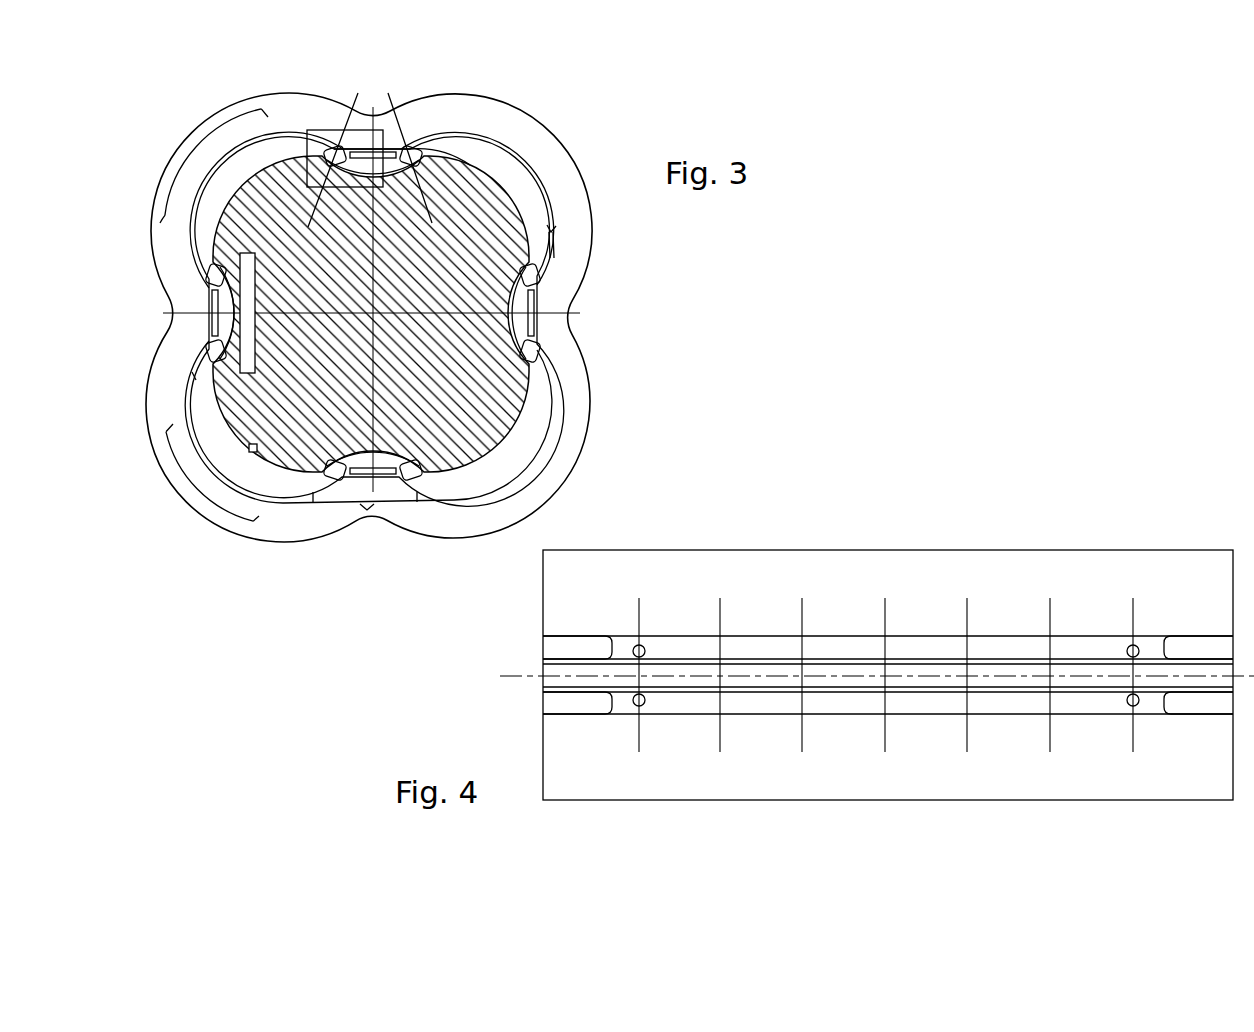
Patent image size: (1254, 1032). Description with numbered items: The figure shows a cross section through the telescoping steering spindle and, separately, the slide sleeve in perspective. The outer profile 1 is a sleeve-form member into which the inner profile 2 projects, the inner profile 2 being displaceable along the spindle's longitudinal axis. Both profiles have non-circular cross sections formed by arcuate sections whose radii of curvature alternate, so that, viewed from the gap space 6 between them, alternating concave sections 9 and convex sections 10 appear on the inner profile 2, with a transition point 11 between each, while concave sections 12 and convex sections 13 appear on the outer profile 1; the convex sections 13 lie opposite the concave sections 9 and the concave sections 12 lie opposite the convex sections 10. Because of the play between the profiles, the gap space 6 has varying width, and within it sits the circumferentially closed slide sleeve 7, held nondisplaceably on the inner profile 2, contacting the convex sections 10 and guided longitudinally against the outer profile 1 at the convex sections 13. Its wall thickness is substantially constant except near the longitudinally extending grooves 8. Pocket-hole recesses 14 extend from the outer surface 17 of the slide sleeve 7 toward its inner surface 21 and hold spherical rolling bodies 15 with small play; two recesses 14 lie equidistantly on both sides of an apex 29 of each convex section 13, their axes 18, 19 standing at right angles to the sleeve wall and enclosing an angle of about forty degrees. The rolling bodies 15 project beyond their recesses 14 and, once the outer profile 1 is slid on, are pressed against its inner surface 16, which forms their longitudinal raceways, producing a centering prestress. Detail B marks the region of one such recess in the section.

In FIG. 3, the outer profile 1 is at (562, 155).
In FIG. 3, the inner profile 2 is at (500, 410).
In FIG. 3, the gap space 6 is at (508, 155).
In FIG. 3, the slide sleeve 7 is at (520, 428).
In FIG. 4, the slide sleeve 7 is at (783, 575).
In FIG. 3, the longitudinally extending grooves 8 is at (363, 153).
In FIG. 3, the concave sections of the inner profile 9 is at (255, 313).
In FIG. 3, the convex sections of the inner profile 10 is at (209, 481).
In FIG. 3, the transition point 11 is at (192, 372).
In FIG. 3, the concave sections of the outer profile 12 is at (211, 157).
In FIG. 3, the convex sections of the outer profile 13 is at (365, 518).
In FIG. 3, the recesses 14 is at (537, 272).
In FIG. 4, the recesses 14 is at (641, 646).
In FIG. 3, the rolling bodies 15 is at (533, 281).
In FIG. 3, the inner surface of the outer profile 16 is at (443, 145).
In FIG. 3, the outer surface of the slide sleeve 17 is at (553, 232).
In FIG. 3, the axis of a recess 18 is at (352, 108).
In FIG. 3, the axis of a recess 19 is at (408, 150).
In FIG. 3, the inner surface of the slide sleeve 21 is at (254, 452).
In FIG. 3, the apex 29 is at (212, 316).
In FIG. 3, the detail B is at (320, 130).